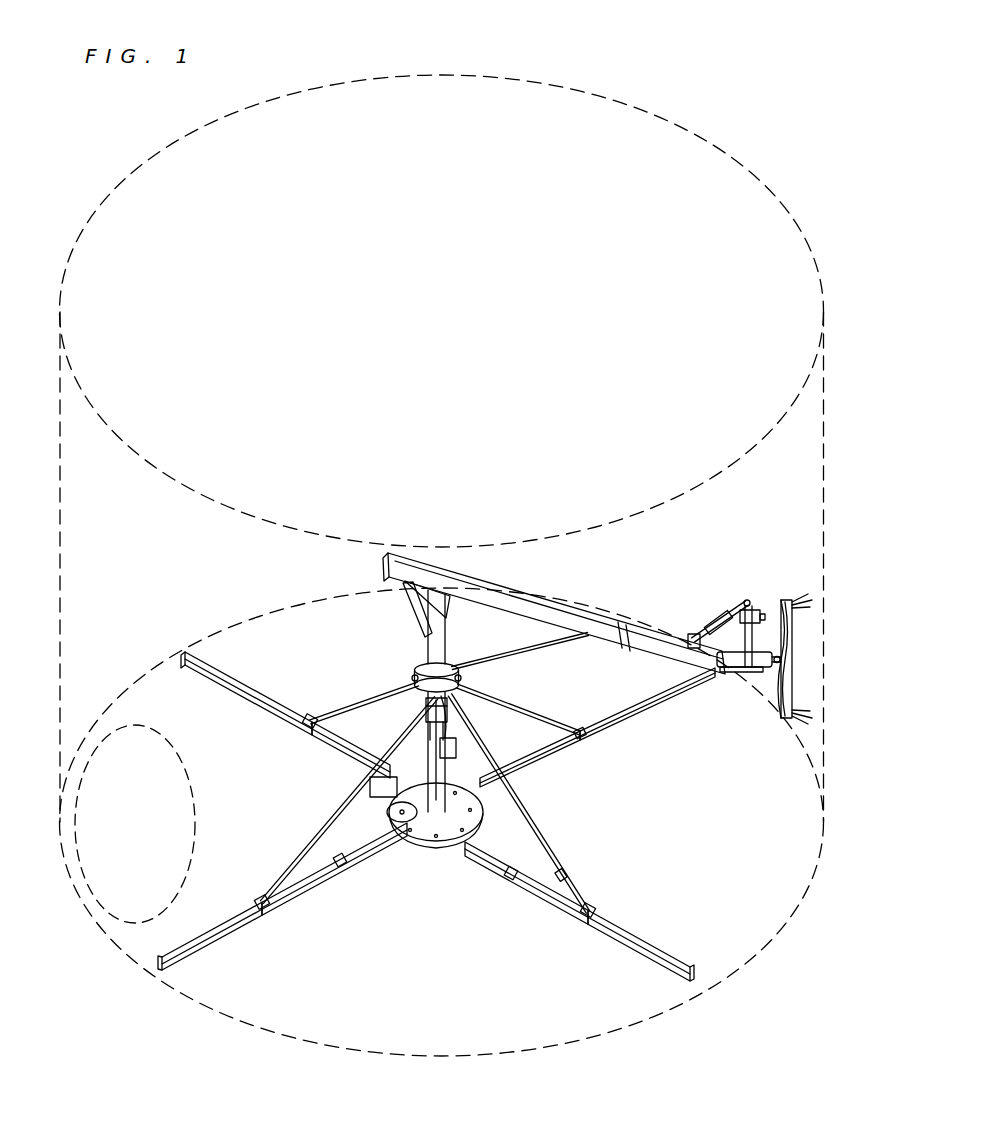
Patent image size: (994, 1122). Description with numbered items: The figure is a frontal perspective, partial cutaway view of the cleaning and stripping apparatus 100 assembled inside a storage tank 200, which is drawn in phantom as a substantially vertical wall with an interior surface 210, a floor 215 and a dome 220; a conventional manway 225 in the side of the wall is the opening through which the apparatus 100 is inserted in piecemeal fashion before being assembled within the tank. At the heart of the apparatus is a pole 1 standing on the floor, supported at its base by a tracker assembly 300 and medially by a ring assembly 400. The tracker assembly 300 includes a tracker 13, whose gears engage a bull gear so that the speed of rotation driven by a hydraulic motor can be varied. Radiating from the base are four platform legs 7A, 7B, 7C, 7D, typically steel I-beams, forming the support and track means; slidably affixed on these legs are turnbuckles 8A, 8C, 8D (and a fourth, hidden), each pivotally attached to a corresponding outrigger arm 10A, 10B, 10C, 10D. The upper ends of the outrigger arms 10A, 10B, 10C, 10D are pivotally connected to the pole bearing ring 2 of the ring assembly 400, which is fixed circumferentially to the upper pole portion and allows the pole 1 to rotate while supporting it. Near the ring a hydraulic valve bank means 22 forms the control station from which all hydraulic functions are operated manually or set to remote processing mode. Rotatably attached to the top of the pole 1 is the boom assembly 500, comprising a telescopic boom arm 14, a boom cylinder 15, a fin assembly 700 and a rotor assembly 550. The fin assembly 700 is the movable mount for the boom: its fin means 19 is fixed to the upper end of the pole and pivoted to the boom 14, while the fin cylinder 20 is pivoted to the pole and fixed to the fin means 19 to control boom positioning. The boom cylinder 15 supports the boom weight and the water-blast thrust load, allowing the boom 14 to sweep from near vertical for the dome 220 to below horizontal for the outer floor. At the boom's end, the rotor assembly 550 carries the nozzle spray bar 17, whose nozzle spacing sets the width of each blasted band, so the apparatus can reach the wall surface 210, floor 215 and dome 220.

The cleaning and stripping apparatus 100 is at (255, 578).
The storage tank 200 is at (788, 968).
The interior surface of wall 210 is at (818, 480).
The floor 215 is at (355, 1046).
The dome 220 is at (221, 503).
The manway 225 is at (100, 899).
The fin assembly 700 is at (391, 590).
The telescopic boom arm 14 is at (503, 586).
The fin means 19 is at (448, 601).
The fin cylinder 20 is at (420, 617).
The boom cylinder 15 is at (512, 652).
The boom assembly 500 is at (607, 604).
The nozzle spray bar 17 is at (782, 718).
The rotor assembly 550 is at (785, 598).
The pole 1 is at (427, 652).
The pole bearing ring 2 is at (463, 672).
The ring assembly 400 is at (470, 693).
The hydraulic valve bank means 22 is at (452, 750).
The tracker assembly 300 is at (432, 838).
The tracker 13 is at (388, 800).
The platform leg 7A is at (612, 946).
The platform leg 7B is at (636, 722).
The platform leg 7C is at (215, 662).
The platform leg 7D is at (208, 945).
The turnbuckle 8A is at (532, 893).
The turnbuckle 8C is at (342, 745).
The turnbuckle 8D is at (312, 890).
The outrigger arm 10A is at (548, 845).
The outrigger arm 10B is at (542, 710).
The outrigger arm 10C is at (372, 702).
The outrigger arm 10D is at (304, 852).